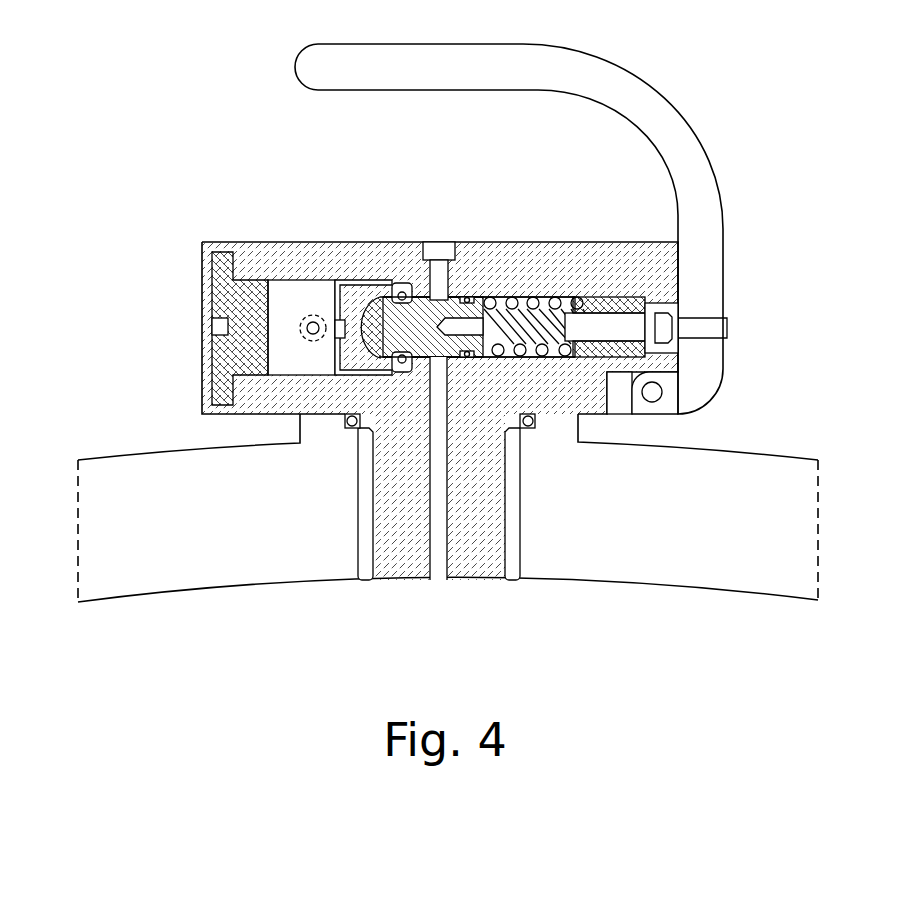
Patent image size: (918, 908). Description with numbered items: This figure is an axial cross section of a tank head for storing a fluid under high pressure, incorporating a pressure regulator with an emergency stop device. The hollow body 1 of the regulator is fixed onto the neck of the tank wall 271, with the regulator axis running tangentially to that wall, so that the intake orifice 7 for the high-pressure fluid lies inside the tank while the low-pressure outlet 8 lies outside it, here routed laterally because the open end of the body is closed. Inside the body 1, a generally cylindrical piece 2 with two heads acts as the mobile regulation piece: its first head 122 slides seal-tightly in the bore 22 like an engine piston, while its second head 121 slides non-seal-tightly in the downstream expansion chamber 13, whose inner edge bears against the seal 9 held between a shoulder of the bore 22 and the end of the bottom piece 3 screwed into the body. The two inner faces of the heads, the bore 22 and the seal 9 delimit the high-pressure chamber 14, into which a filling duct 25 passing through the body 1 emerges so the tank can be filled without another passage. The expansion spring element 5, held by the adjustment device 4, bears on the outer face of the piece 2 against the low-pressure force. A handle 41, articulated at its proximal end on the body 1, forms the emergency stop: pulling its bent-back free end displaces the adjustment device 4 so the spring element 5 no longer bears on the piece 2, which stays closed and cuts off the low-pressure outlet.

The hollow body 1 is at (270, 260).
The piece with two heads 2 is at (390, 332).
The bottom piece 3 is at (340, 355).
The adjustment device 4 is at (610, 296).
The handle 41 is at (583, 82).
The expansion spring element 5 is at (551, 356).
The intake orifice 7 is at (441, 578).
The low-pressure outlet 8 is at (306, 328).
The seal 9 is at (400, 286).
The downstream expansion chamber 13 is at (302, 305).
The high-pressure chamber 14 is at (421, 358).
The bore 22 is at (480, 294).
The filling duct 25 is at (440, 251).
The second head 121 is at (376, 356).
The first head 122 is at (482, 356).
The tank wall 271 is at (666, 562).